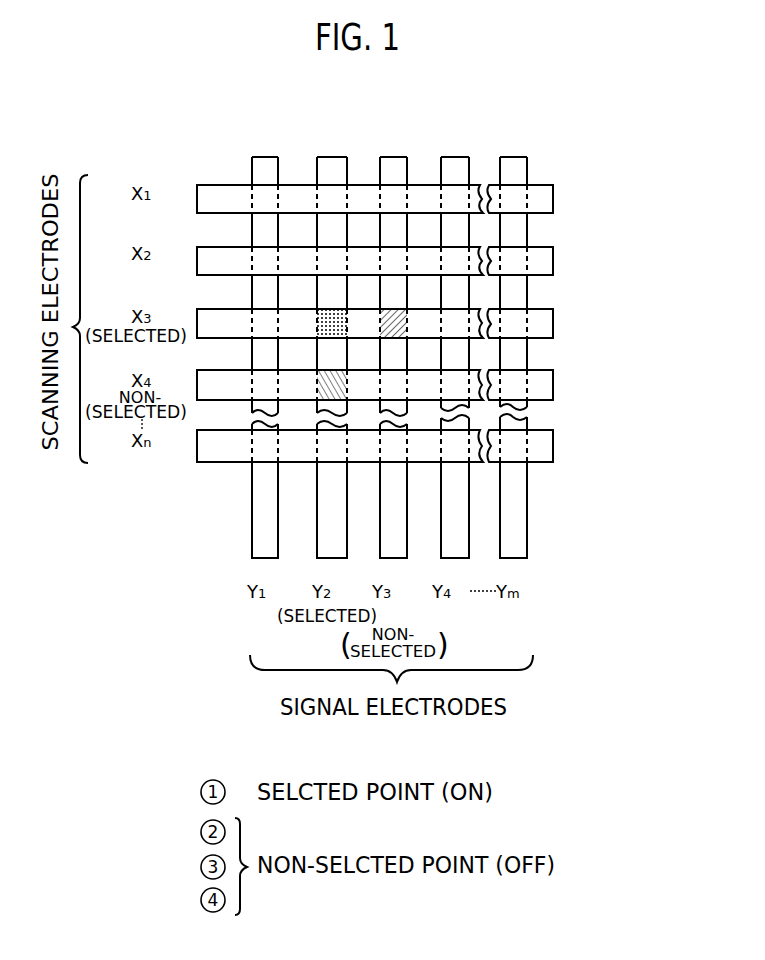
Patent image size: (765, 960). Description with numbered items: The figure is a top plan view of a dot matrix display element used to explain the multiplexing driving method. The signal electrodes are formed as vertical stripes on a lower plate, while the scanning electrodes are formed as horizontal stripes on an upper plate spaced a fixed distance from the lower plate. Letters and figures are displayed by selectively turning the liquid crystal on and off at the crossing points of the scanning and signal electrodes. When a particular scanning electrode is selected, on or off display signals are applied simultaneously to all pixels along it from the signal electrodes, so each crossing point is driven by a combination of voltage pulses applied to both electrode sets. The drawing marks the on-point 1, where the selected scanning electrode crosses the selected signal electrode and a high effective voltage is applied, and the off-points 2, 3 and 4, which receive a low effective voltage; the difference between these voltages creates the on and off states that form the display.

The on-point 1 is at (332, 323).
The off-point 2 is at (393, 323).
The off-point 3 is at (332, 385).
The off-point 4 is at (393, 385).